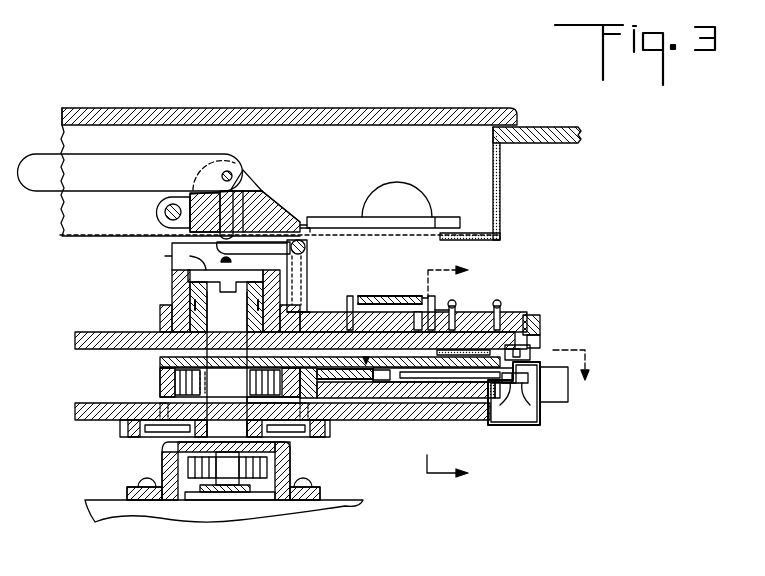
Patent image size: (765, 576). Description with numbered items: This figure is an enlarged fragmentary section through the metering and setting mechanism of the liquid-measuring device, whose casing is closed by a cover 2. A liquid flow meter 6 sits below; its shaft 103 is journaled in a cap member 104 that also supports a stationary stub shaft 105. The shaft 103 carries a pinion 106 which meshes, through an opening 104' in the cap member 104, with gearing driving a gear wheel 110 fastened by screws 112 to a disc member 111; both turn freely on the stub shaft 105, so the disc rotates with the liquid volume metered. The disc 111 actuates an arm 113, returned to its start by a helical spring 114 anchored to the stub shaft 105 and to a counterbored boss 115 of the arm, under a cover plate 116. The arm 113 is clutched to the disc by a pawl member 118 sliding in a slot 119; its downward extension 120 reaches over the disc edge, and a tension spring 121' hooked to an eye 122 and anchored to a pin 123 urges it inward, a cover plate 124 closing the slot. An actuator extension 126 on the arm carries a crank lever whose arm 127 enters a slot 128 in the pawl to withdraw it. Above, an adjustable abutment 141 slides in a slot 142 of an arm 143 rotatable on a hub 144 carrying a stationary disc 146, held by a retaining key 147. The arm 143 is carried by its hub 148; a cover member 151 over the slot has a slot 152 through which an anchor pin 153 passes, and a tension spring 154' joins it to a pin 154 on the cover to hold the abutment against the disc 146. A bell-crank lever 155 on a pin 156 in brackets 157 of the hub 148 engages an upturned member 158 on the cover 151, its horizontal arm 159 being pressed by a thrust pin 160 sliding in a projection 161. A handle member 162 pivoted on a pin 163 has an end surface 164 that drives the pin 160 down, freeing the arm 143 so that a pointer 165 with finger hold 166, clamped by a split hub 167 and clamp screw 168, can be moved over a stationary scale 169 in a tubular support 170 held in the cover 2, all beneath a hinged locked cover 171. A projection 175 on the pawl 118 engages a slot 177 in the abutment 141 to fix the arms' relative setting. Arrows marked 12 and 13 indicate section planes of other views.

The cover 2 is at (565, 126).
The liquid flow meter 6 is at (172, 520).
The section line 12 is at (476, 356).
The section line 13 is at (432, 375).
The shaft 103 is at (268, 480).
The cap member 104 is at (214, 471).
The opening 104' is at (313, 471).
The stationary stub shaft 105 is at (247, 356).
The pinion 106 is at (185, 474).
The gear wheel 110 is at (120, 438).
The disc member 111 is at (78, 426).
The screws 112 is at (150, 408).
The arm 113 is at (470, 410).
The helical spring 114 is at (165, 380).
The counterbored boss 115 is at (160, 372).
The cover plate 116 is at (165, 362).
The pawl member 118 is at (460, 400).
The slot 119 is at (410, 400).
The downward extension 120 is at (495, 420).
The tension spring 121' is at (400, 451).
The eye 122 is at (372, 400).
The pin 123 is at (255, 401).
The cover plate 124 is at (440, 400).
The actuator extension 126 is at (570, 393).
The lever arm 127 is at (540, 405).
The slot 128 is at (515, 396).
The adjustable abutment 141 is at (512, 312).
The slot 142 is at (540, 318).
The arm 143 is at (455, 312).
The hub 144 is at (160, 311).
The stationary disc 146 is at (85, 332).
The retaining key 147 is at (200, 268).
The hub 148 is at (172, 273).
The cover member 151 is at (545, 312).
The slot 152 is at (352, 296).
The anchor pin 153 is at (356, 298).
The anchor pin 154 is at (481, 280).
The tension spring 154' is at (446, 273).
The bell crank lever 155 is at (302, 220).
The pin 156 is at (312, 226).
The brackets 157 is at (307, 268).
The upwardly turned member 158 is at (308, 290).
The horizontal arm 159 is at (238, 250).
The thrust pin 160 is at (254, 190).
The projection 161 is at (257, 198).
The handle member 162 is at (110, 160).
The pin 163 is at (233, 170).
The end surface 164 is at (275, 150).
The pointer 165 is at (475, 215).
The finger hold 166 is at (413, 200).
The split hub 167 is at (275, 205).
The clamp screw 168 is at (163, 213).
The stationary scale 169 is at (498, 205).
The tubular support 170 is at (500, 182).
The hinged locked cover 171 is at (410, 110).
The projection 175 is at (565, 340).
The slot 177 is at (540, 340).